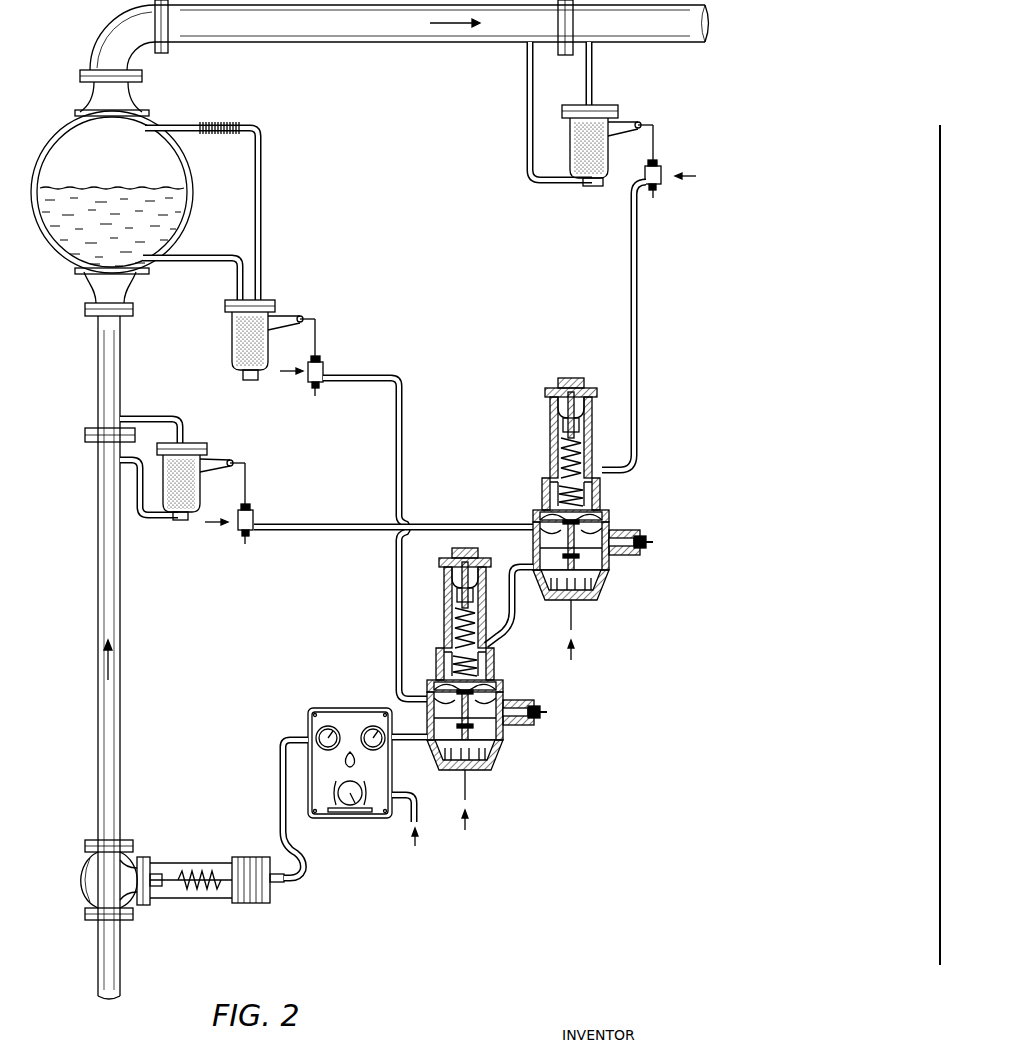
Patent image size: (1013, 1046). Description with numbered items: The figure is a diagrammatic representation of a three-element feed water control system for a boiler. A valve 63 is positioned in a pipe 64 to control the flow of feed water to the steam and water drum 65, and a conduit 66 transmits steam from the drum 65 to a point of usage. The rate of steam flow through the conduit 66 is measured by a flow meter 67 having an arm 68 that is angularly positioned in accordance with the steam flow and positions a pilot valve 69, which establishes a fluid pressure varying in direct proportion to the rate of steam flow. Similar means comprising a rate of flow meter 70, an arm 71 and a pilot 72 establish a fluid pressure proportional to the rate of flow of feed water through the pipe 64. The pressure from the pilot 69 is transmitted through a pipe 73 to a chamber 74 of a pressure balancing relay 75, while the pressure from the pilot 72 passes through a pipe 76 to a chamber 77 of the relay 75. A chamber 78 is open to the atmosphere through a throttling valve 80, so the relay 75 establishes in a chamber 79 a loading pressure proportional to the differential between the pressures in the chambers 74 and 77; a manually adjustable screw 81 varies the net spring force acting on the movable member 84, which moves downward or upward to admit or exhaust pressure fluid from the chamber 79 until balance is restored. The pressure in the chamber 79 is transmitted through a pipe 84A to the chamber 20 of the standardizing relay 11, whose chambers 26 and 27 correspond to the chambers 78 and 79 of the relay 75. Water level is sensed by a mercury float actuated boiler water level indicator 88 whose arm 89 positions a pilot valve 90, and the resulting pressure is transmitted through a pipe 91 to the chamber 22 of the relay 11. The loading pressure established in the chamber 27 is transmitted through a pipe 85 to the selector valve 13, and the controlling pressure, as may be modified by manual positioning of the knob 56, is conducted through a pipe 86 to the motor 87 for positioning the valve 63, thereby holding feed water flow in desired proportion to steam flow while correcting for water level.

The standardizing relay 11 is at (472, 689).
The selector valve 13 is at (363, 786).
The chamber 20 is at (444, 598).
The chamber 22 is at (450, 670).
The chamber 26 is at (472, 718).
The chamber 27 is at (487, 785).
The knob 56 is at (344, 797).
The valve 63 is at (80, 882).
The pipe 64 is at (92, 728).
The steam and water drum 65 is at (58, 255).
The conduit 66 is at (322, 45).
The flow meter 67 is at (574, 114).
The arm 68 is at (648, 122).
The pilot valve 69 is at (661, 168).
The rate of flow meter 70 is at (163, 487).
The arm 71 is at (243, 463).
The pilot 72 is at (255, 510).
The pipe 73 is at (638, 322).
The chamber 74 is at (544, 435).
The pressure balancing relay 75 is at (580, 519).
The pipe 76 is at (342, 537).
The chamber 77 is at (593, 500).
The chamber 78 is at (556, 548).
The chamber 79 is at (594, 613).
The throttling valve 80 is at (644, 546).
The manually adjustable screw 81 is at (540, 394).
The movable member 84 is at (552, 531).
The pipe 84A is at (506, 632).
The pipe 85 is at (412, 744).
The pipe 86 is at (280, 790).
The motor 87 is at (250, 857).
The boiler water level indicator 88 is at (209, 251).
The arm 89 is at (308, 313).
The pilot valve 90 is at (325, 364).
The pipe 91 is at (404, 444).